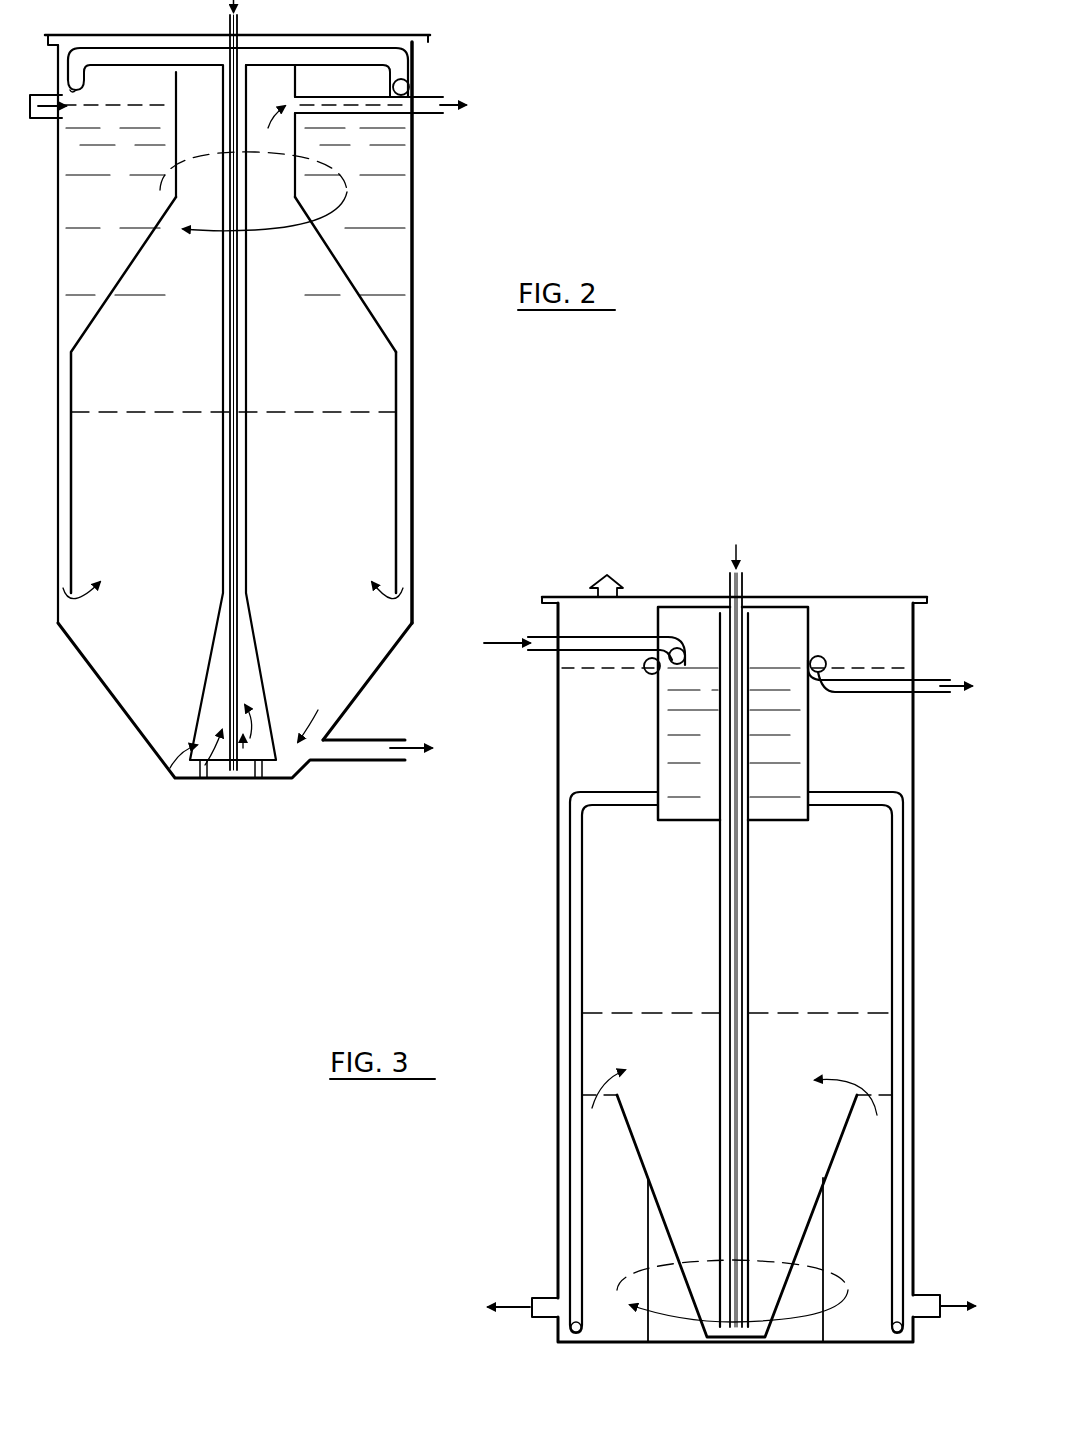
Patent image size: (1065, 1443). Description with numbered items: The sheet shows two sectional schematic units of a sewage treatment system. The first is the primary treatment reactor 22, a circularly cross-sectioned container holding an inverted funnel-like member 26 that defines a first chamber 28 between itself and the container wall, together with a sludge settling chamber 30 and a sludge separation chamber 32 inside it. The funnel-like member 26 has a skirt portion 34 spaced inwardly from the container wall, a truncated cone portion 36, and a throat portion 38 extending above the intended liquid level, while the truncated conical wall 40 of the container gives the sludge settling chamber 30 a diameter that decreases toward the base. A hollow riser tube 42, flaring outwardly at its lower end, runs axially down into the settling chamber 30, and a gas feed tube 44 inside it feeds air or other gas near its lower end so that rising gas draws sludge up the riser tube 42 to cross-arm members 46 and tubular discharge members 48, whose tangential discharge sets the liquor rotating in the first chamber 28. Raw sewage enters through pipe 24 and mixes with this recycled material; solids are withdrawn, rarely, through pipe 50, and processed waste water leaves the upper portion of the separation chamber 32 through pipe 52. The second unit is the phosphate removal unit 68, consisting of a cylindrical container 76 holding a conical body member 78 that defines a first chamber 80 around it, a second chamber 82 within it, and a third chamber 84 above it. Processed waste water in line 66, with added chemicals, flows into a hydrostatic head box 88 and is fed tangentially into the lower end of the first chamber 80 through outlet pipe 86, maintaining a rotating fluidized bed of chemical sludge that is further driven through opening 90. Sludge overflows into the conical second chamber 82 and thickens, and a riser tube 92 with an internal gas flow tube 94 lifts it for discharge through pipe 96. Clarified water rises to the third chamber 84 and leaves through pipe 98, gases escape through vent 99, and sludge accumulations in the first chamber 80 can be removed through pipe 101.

In FIG. 2, the reactor 22 is at (413, 305).
In FIG. 2, the pipe 24 is at (46, 118).
In FIG. 2, the inverted funnel-like member 26 is at (365, 318).
In FIG. 2, the first chamber 28 is at (392, 247).
In FIG. 2, the sludge settling chamber 30 is at (150, 700).
In FIG. 2, the sludge separation chamber 32 is at (363, 437).
In FIG. 2, the skirt portion 34 is at (397, 487).
In FIG. 2, the truncated cone portion 36 is at (102, 308).
In FIG. 2, the throat portion 38 is at (180, 75).
In FIG. 2, the truncated conical wall 40 is at (370, 692).
In FIG. 2, the hollow riser tube 42 is at (247, 372).
In FIG. 2, the gas feed tube 44 is at (240, 322).
In FIG. 2, the cross-arm members 46 is at (346, 48).
In FIG. 2, the tubular discharge members 48 is at (80, 80).
In FIG. 2, the pipe 50 is at (360, 752).
In FIG. 2, the pipe 52 is at (428, 118).
In FIG. 3, the line 66 is at (540, 651).
In FIG. 3, the phosphate removal unit 68 is at (870, 548).
In FIG. 3, the cylindrical container 76 is at (557, 1050).
In FIG. 3, the conical body member 78 is at (632, 1122).
In FIG. 3, the first chamber 80 is at (597, 1183).
In FIG. 3, the second chamber 82 is at (795, 1178).
In FIG. 3, the third chamber 84 is at (625, 980).
In FIG. 3, the outlet pipe 86 is at (890, 902).
In FIG. 3, the hydrostatic head box 88 is at (657, 741).
In FIG. 3, the opening 90 is at (540, 1318).
In FIG. 3, the riser tube 92 is at (745, 975).
In FIG. 3, the gas flow tube 94 is at (737, 893).
In FIG. 3, the pipe 96 is at (742, 568).
In FIG. 3, the pipe 98 is at (848, 680).
In FIG. 3, the vent 99 is at (617, 590).
In FIG. 3, the pipe 101 is at (925, 1292).